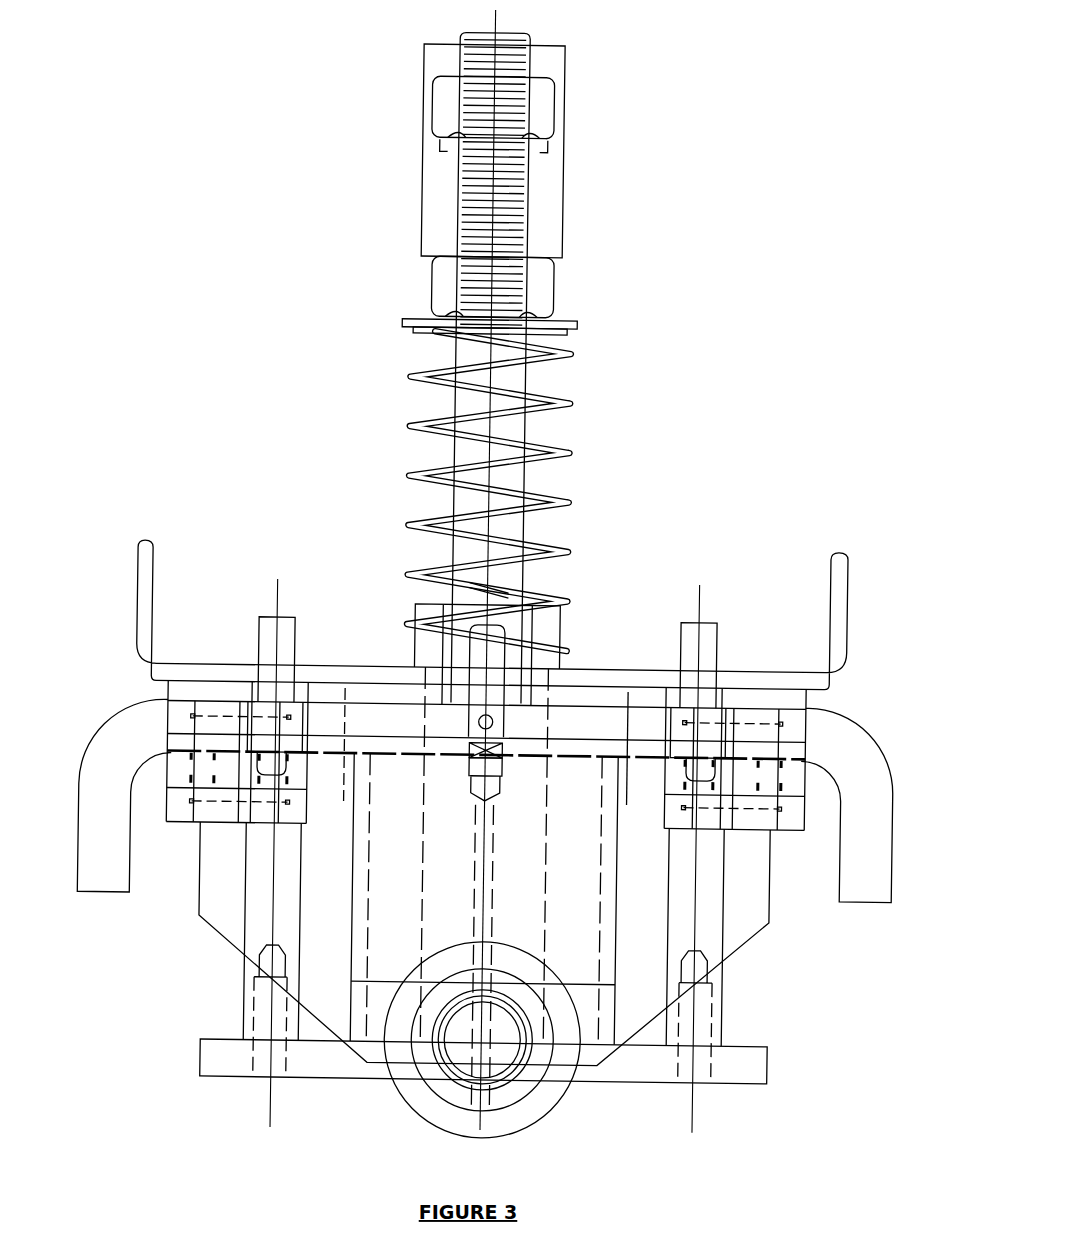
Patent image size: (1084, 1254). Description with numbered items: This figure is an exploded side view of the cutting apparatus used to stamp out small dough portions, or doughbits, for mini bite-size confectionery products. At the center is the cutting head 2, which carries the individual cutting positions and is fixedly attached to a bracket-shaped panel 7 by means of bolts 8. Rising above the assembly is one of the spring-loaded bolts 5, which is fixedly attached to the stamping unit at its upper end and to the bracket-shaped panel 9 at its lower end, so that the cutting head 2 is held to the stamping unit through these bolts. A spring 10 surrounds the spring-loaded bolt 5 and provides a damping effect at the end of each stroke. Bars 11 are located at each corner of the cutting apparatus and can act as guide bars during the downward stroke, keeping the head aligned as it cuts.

The cutting head 2 is at (616, 1015).
The spring-loaded bolt 5 is at (518, 417).
The bracket-shaped panel 7 is at (105, 843).
The bolt 8 is at (503, 727).
The bracket-shaped panel 9 is at (139, 613).
The spring 10 is at (412, 478).
The bar 11 is at (251, 993).